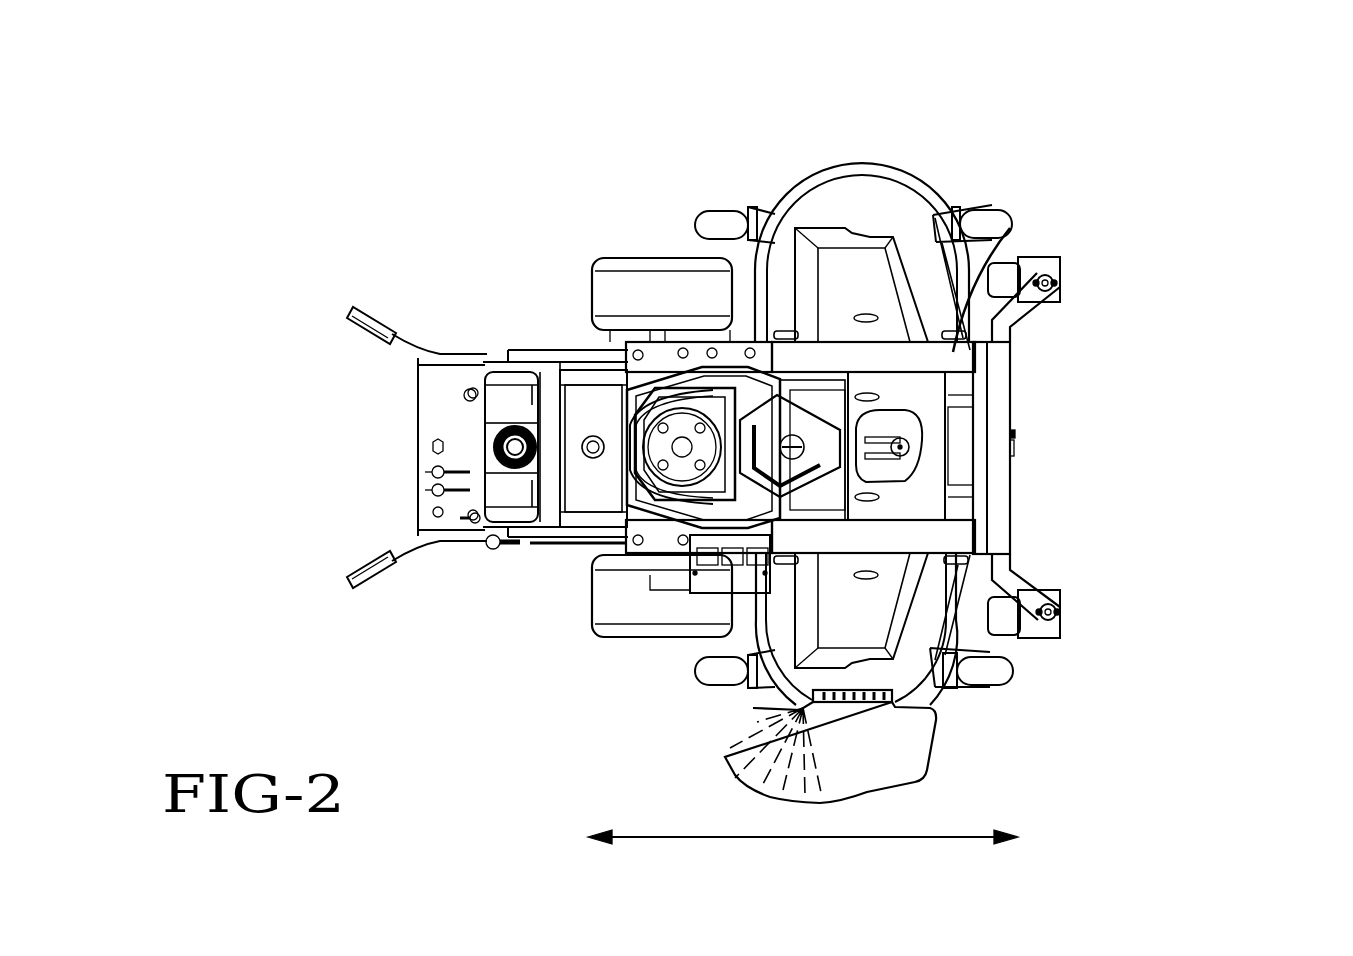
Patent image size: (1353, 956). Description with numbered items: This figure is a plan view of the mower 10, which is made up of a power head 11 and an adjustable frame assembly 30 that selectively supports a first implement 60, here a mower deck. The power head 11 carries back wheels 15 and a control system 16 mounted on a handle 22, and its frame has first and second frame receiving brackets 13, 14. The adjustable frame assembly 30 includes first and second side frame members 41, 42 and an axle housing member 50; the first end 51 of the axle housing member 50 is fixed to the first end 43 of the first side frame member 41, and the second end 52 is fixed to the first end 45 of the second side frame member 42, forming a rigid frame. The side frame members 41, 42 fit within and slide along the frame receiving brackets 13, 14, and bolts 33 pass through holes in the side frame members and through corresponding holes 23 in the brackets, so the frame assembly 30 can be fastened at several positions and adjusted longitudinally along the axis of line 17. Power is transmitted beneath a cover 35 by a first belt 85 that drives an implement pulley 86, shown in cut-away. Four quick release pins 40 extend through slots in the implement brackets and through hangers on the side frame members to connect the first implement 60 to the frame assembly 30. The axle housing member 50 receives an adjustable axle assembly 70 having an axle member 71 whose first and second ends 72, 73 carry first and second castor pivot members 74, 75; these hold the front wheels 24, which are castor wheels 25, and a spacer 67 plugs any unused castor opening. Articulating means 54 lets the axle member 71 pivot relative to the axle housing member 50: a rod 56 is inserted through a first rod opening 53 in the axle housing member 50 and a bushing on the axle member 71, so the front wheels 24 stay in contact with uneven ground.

The mower 10 is at (1158, 135).
The power head 11 is at (470, 162).
The first frame receiving bracket 13 is at (630, 556).
The second frame receiving bracket 14 is at (605, 340).
The back wheels 15 is at (610, 272).
The control system 16 is at (340, 467).
The line 17 is at (760, 838).
The handle 22 is at (412, 540).
The holes 23 is at (750, 348).
The front wheels 24 is at (1062, 282).
The castor wheels 25 is at (1067, 630).
The adjustable frame assembly 30 is at (1003, 170).
The bolts 33 is at (683, 347).
The cover 35 is at (908, 400).
The quick release pins 40 is at (785, 333).
The first side frame member 41 is at (872, 552).
The second side frame member 42 is at (868, 371).
The first end of first side frame member 43 is at (958, 532).
The first end of second side frame member 45 is at (1007, 233).
The axle housing member 50 is at (1006, 404).
The first end of axle housing member 51 is at (1000, 541).
The second end of axle housing member 52 is at (1010, 343).
The first rod opening 53 is at (1016, 433).
The articulating means 54 is at (1165, 418).
The rod 56 is at (1017, 448).
The first implement 60 is at (857, 185).
The spacer 67 is at (1063, 620).
The adjustable axle assembly 70 is at (1200, 479).
The axle member 71 is at (1005, 577).
The first end of axle member 72 is at (1060, 608).
The second end of axle member 73 is at (1030, 298).
The first castor pivot member 74 is at (1043, 633).
The second castor pivot member 75 is at (1052, 278).
The first belt 85 is at (882, 440).
The implement pulley 86 is at (903, 453).